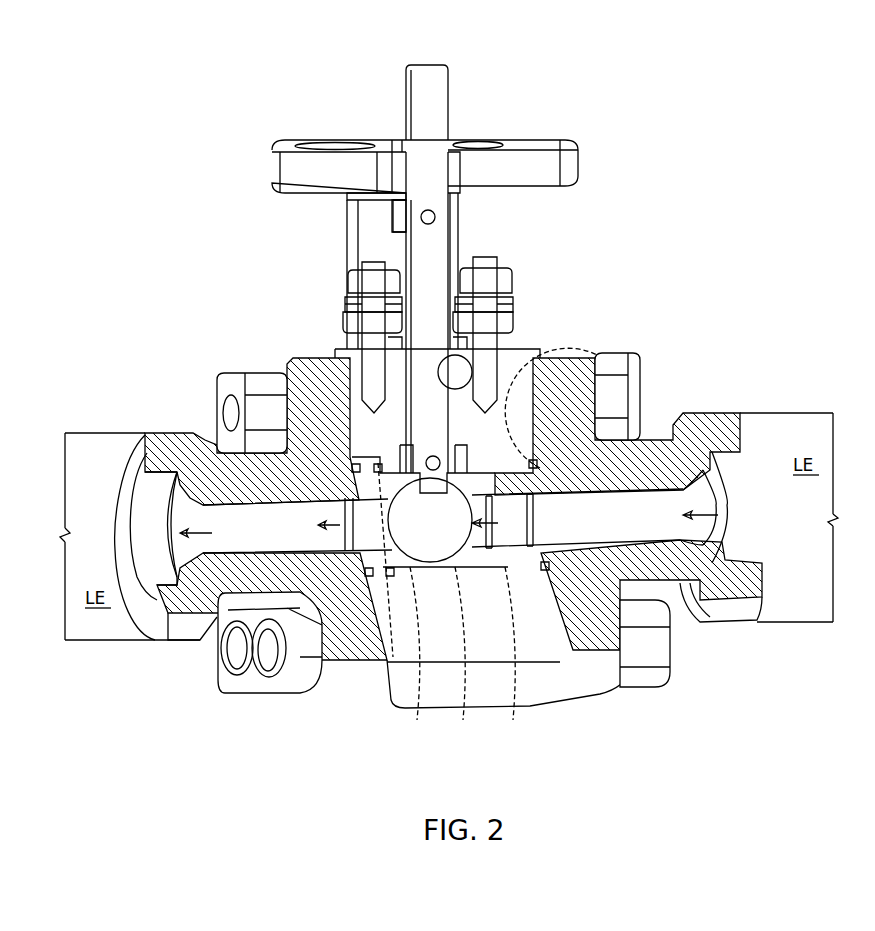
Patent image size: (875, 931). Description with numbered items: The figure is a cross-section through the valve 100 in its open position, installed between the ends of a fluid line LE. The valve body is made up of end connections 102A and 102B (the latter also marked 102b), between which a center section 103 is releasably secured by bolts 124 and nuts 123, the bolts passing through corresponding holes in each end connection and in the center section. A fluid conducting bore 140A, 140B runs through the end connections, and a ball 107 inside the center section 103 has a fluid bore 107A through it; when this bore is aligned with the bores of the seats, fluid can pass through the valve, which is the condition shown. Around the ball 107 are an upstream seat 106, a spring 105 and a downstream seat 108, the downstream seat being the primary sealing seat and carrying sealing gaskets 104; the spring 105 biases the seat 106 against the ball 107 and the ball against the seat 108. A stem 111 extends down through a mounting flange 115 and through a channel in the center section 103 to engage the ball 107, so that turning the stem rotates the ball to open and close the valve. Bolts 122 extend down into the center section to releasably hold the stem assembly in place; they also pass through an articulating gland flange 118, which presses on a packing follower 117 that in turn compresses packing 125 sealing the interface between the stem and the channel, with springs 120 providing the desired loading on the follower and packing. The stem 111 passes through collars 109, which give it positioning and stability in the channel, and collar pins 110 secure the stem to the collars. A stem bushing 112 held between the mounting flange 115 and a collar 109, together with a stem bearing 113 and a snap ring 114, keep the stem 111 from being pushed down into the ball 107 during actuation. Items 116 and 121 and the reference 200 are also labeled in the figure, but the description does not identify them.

The valve 100 is at (710, 298).
The end connection 102A is at (740, 418).
The end connection 102B is at (158, 440).
The end connection 102b is at (182, 620).
The center section 103 is at (553, 696).
The sealing gasket 104 is at (622, 400).
The spring 105 is at (530, 504).
The upstream seat 106 is at (522, 655).
The ball 107 is at (471, 655).
The fluid bore 107A is at (444, 533).
The downstream seat 108 is at (417, 655).
The collar 109 is at (397, 215).
The collar pin 110 is at (440, 220).
The stem 111 is at (440, 75).
The stem bushing 112 is at (368, 192).
The stem bearing 113 is at (372, 156).
The snap ring 114 is at (402, 140).
The mounting flange 115 is at (567, 157).
The guide rod 116 is at (368, 250).
The packing follower 117 is at (370, 348).
The articulating gland flange 118 is at (508, 322).
The spring 120 is at (510, 300).
The upper nut 121 is at (508, 275).
The bolt 122 is at (497, 262).
The nut 123 is at (300, 693).
The bolt 124 is at (262, 665).
The packing 125 is at (592, 352).
The fluid conducting bore 140A is at (644, 533).
The fluid conducting bore 140B is at (290, 533).
The flow direction 200 is at (738, 505).